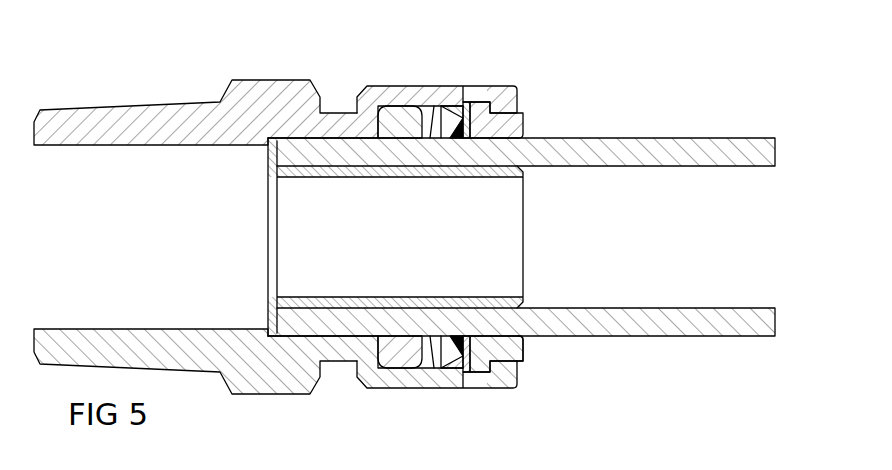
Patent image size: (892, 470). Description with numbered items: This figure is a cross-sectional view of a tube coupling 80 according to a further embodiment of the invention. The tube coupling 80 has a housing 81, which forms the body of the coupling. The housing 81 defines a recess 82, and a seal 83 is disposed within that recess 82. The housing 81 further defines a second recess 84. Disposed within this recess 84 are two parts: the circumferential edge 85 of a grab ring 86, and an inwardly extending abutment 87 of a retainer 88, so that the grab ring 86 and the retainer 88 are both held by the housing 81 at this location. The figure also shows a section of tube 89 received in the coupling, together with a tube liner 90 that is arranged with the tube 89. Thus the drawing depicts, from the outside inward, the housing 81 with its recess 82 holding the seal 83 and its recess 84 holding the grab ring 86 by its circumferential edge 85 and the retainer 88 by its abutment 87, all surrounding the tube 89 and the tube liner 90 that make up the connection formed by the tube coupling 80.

The tube coupling 80 is at (636, 94).
The housing 81 is at (341, 112).
The recess 82 is at (407, 366).
The seal 83 is at (412, 108).
The recess 84 is at (482, 102).
The circumferential edge 85 is at (462, 102).
The grab ring 86 is at (455, 348).
The inwardly extending abutment 87 is at (482, 372).
The retainer 88 is at (528, 350).
The tube 89 is at (693, 137).
The tube liner 90 is at (328, 297).